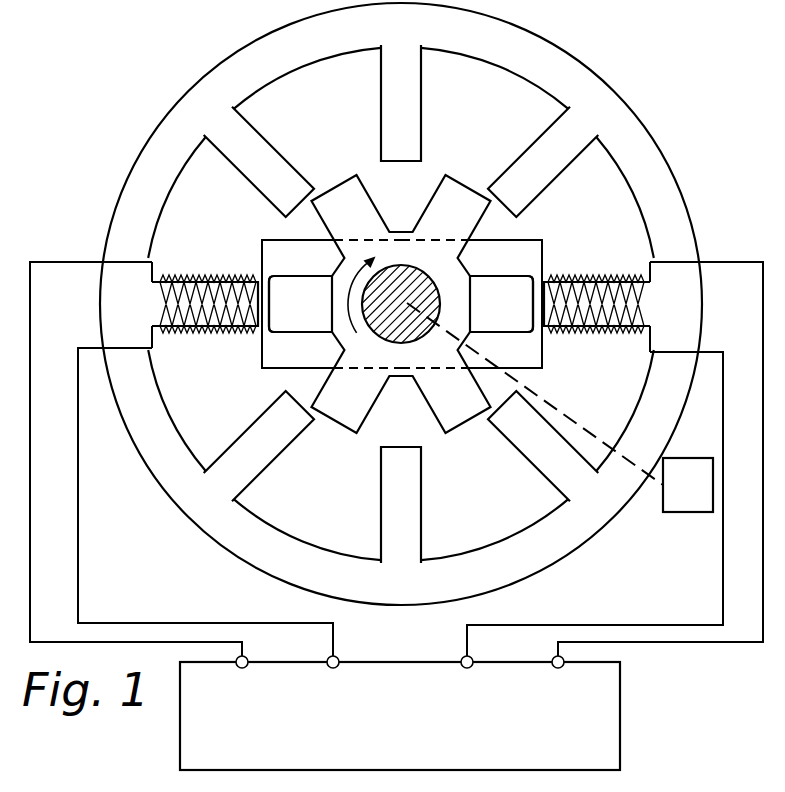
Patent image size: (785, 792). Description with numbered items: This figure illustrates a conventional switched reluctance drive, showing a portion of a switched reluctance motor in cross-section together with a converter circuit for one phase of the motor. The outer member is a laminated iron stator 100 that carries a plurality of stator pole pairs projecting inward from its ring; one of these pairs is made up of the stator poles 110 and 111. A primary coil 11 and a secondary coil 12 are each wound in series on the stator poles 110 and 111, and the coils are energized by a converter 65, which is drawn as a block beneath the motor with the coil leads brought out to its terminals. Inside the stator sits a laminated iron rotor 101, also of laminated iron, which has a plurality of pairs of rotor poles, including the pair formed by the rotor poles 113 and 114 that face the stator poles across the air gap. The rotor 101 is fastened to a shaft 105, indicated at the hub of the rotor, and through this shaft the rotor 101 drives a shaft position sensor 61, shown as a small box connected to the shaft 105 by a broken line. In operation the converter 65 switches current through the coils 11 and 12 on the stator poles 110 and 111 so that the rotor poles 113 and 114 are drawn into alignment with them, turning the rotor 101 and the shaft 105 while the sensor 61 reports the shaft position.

The laminated iron stator 100 is at (595, 77).
The primary coil 11 is at (154, 271).
The secondary coil 12 is at (156, 338).
The laminated iron rotor 101 is at (401, 304).
The stator pole 111 is at (268, 277).
The stator pole 110 is at (538, 278).
The rotor pole 114 is at (303, 317).
The rotor pole 113 is at (515, 317).
The shaft 105 is at (586, 430).
The shaft position sensor 61 is at (700, 495).
The converter 65 is at (389, 740).